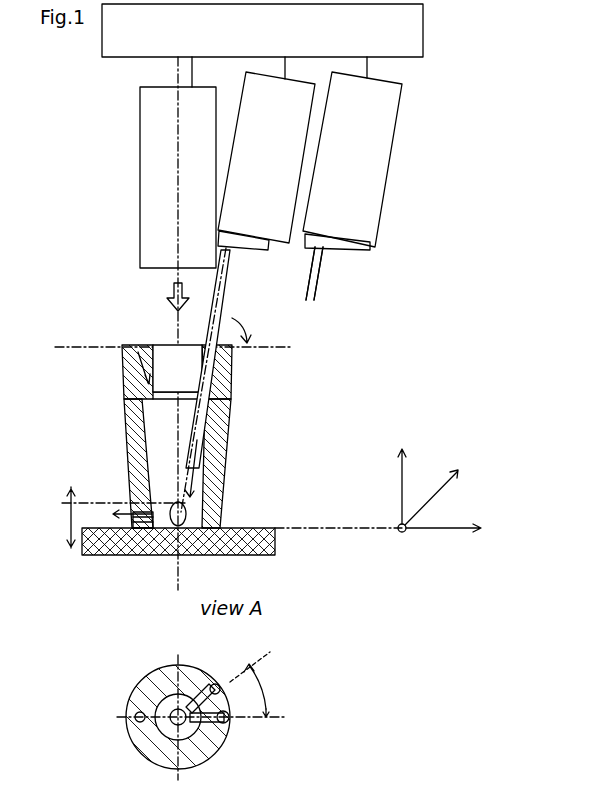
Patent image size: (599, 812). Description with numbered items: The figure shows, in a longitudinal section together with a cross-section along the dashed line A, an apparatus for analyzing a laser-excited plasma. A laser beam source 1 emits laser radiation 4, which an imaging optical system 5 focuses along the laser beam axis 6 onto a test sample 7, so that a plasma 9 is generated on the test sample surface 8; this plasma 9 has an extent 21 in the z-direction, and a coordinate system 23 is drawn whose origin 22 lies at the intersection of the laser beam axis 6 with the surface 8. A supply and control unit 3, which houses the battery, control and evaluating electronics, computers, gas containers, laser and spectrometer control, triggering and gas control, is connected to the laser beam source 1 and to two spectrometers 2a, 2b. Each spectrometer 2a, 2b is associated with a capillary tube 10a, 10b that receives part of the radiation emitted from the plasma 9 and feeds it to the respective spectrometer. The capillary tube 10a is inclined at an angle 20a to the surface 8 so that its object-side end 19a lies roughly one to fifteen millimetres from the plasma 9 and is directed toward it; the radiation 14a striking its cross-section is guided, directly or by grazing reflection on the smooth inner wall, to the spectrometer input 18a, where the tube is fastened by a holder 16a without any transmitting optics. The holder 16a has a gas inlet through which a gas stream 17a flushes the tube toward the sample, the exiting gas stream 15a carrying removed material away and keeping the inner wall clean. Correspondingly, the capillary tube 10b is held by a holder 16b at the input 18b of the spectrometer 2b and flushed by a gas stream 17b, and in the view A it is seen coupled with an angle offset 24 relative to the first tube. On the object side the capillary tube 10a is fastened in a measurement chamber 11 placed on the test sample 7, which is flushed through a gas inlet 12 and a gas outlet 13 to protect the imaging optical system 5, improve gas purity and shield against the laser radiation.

The laser beam source 1 is at (155, 185).
The spectrometer 2a is at (285, 133).
The spectrometer 2b is at (383, 76).
The supply and control unit 3 is at (378, 37).
The laser radiation 4 is at (166, 344).
The imaging optical system 5 is at (166, 344).
The laser beam axis 6 is at (175, 470).
The test sample 7 is at (104, 552).
The test sample surface 8 is at (275, 533).
The plasma 9 is at (175, 505).
The capillary tube 10a is at (210, 355).
The capillary tube 10b is at (318, 268).
The measurement chamber 11 is at (232, 415).
The gas inlet 12 is at (125, 345).
The gas outlet 13 is at (142, 512).
The radiation emitted from the plasma 14a is at (200, 486).
The gas stream exiting the capillary tube 15a is at (220, 500).
The holder 16a is at (238, 283).
The holder 16b is at (328, 244).
The gas stream 17a is at (243, 242).
The gas stream 17b is at (363, 241).
The spectrometer input 18a is at (247, 232).
The spectrometer input 18b is at (318, 232).
The object-side end of the capillary tube 19a is at (190, 476).
The angle 20a is at (250, 327).
The extent 21 is at (111, 517).
The origin 22 is at (203, 533).
The coordinate system 23 is at (412, 535).
The angle offset 24 is at (270, 690).